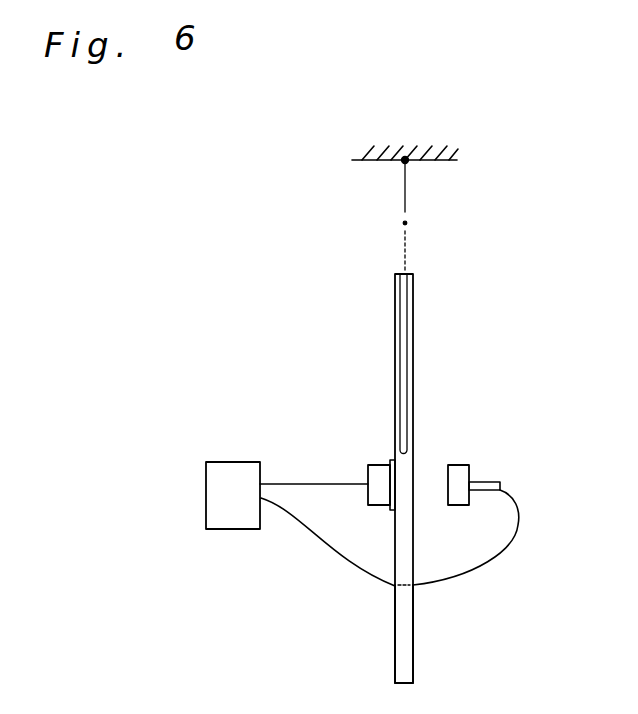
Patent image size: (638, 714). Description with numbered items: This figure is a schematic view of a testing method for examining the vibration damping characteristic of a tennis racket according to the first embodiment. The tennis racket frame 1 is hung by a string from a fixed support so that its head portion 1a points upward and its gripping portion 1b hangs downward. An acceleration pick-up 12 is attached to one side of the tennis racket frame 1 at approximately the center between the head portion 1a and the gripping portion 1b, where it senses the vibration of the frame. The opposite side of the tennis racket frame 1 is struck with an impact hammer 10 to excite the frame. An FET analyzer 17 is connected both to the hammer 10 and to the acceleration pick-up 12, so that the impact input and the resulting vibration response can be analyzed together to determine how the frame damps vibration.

The tennis racket frame 1 is at (414, 413).
The head portion 1a is at (395, 282).
The gripping portion 1b is at (415, 670).
The impact hammer 10 is at (458, 472).
The acceleration pick-up 12 is at (383, 463).
The FET analyzer 17 is at (222, 490).